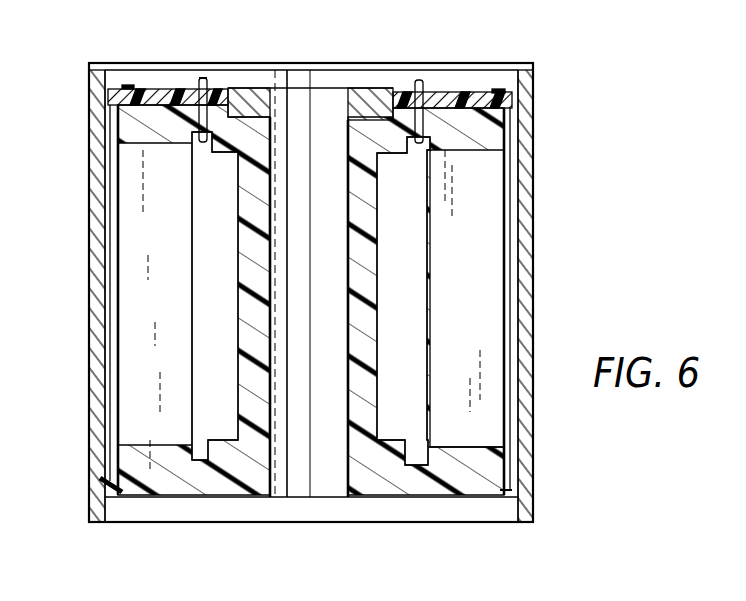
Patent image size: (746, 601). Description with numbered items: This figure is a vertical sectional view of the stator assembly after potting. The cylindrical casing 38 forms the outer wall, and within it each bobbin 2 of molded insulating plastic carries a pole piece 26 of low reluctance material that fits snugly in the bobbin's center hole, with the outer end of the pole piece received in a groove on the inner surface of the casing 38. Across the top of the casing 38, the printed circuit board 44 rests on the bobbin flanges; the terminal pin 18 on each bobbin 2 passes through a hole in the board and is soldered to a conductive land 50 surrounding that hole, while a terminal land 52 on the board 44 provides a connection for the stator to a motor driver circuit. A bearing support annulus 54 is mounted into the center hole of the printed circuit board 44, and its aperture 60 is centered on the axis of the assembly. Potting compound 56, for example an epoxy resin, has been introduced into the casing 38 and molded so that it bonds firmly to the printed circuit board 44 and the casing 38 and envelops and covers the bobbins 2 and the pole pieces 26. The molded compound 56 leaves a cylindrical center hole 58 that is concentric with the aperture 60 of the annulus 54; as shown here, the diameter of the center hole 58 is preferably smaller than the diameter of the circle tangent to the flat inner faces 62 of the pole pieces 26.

The bobbin 2 is at (487, 210).
The terminal pin 18 is at (201, 78).
The pole piece 26 is at (209, 292).
The casing 38 is at (534, 237).
The printed circuit board 44 is at (462, 95).
The conductive land 50 is at (200, 85).
The terminal land 52 is at (128, 86).
The bearing support annulus 54 is at (373, 95).
The potting compound 56 is at (428, 487).
The center hole 58 is at (263, 472).
The aperture 60 is at (272, 100).
The inner face 62 is at (243, 249).